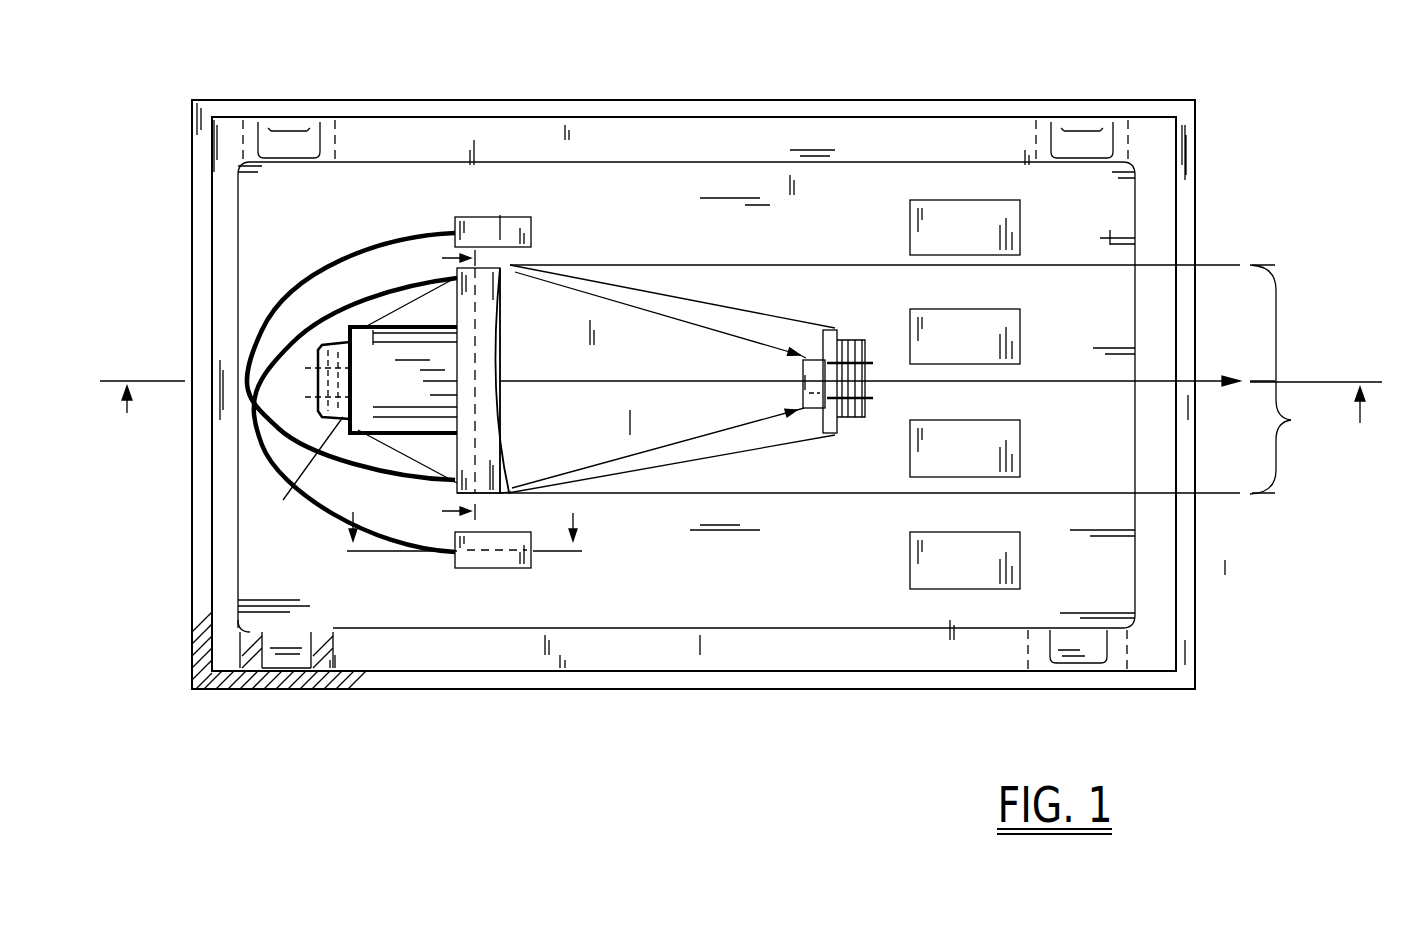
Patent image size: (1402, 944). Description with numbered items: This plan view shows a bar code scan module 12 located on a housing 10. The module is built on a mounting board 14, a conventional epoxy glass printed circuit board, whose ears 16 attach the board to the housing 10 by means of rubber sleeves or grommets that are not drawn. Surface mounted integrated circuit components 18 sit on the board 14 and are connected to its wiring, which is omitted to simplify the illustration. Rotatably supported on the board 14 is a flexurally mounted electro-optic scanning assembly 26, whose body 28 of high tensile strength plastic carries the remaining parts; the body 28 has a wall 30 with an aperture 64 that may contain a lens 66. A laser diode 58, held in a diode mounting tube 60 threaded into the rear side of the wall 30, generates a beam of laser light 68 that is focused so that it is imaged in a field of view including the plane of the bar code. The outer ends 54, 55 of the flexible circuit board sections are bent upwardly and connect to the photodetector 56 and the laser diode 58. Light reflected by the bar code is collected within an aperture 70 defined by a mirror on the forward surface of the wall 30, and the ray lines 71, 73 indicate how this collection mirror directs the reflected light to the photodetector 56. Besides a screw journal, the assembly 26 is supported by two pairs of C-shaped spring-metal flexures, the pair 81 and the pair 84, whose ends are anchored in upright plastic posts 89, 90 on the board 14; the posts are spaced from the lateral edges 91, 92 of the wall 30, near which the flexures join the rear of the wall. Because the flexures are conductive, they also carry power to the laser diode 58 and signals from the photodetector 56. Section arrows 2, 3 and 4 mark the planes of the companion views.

The housing 10 is at (1196, 597).
The scan module 12 is at (634, 216).
The mounting board 14 is at (1108, 628).
The ears 16 is at (290, 133).
The integrated circuit components 18 is at (941, 242).
The flexurally mounted electro-optic scanning assembly 26 is at (573, 274).
The body 28 is at (748, 357).
The wall 30 is at (513, 263).
The outer end of flex board section 54 is at (866, 410).
The outer end of flex board section 55 is at (320, 368).
The photodetector 56 is at (822, 365).
The laser diode 58 is at (292, 468).
The diode mounting tube 60 is at (363, 327).
The aperture 64 is at (501, 375).
The lens 66 is at (503, 391).
The beam of laser light 68 is at (1160, 382).
The collection aperture 70 is at (894, 379).
The ray line 71 is at (718, 334).
The ray line 73 is at (718, 430).
The pair of flexures 81 is at (366, 238).
The pair of flexures 84 is at (272, 449).
The post 89 is at (500, 568).
The post 90 is at (510, 217).
The lateral edge of wall 91 is at (501, 493).
The lateral edge of wall 92 is at (501, 262).
The section line 2 is at (741, 384).
The section line 3 is at (448, 385).
The section line 4 is at (463, 550).